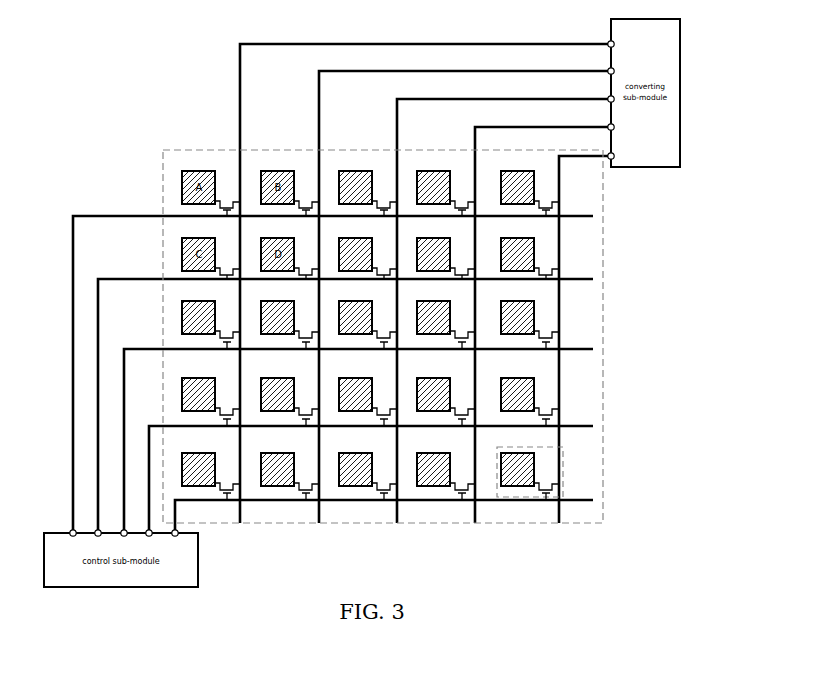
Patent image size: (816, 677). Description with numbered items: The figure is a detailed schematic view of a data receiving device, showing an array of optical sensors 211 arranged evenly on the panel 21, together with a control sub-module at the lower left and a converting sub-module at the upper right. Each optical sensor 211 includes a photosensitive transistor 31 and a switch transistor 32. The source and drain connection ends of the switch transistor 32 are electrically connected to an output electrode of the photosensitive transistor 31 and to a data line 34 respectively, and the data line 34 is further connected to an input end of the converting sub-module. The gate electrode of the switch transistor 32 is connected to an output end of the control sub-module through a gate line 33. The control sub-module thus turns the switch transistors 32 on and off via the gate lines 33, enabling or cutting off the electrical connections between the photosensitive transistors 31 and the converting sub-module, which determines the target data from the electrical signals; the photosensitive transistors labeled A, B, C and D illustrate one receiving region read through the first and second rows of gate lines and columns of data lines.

The panel 21 is at (606, 331).
The optical sensor 211 is at (563, 467).
The photosensitive transistor 31 is at (533, 250).
The switch transistor 32 is at (547, 197).
The gate line 33 is at (565, 278).
The data line 34 is at (560, 315).